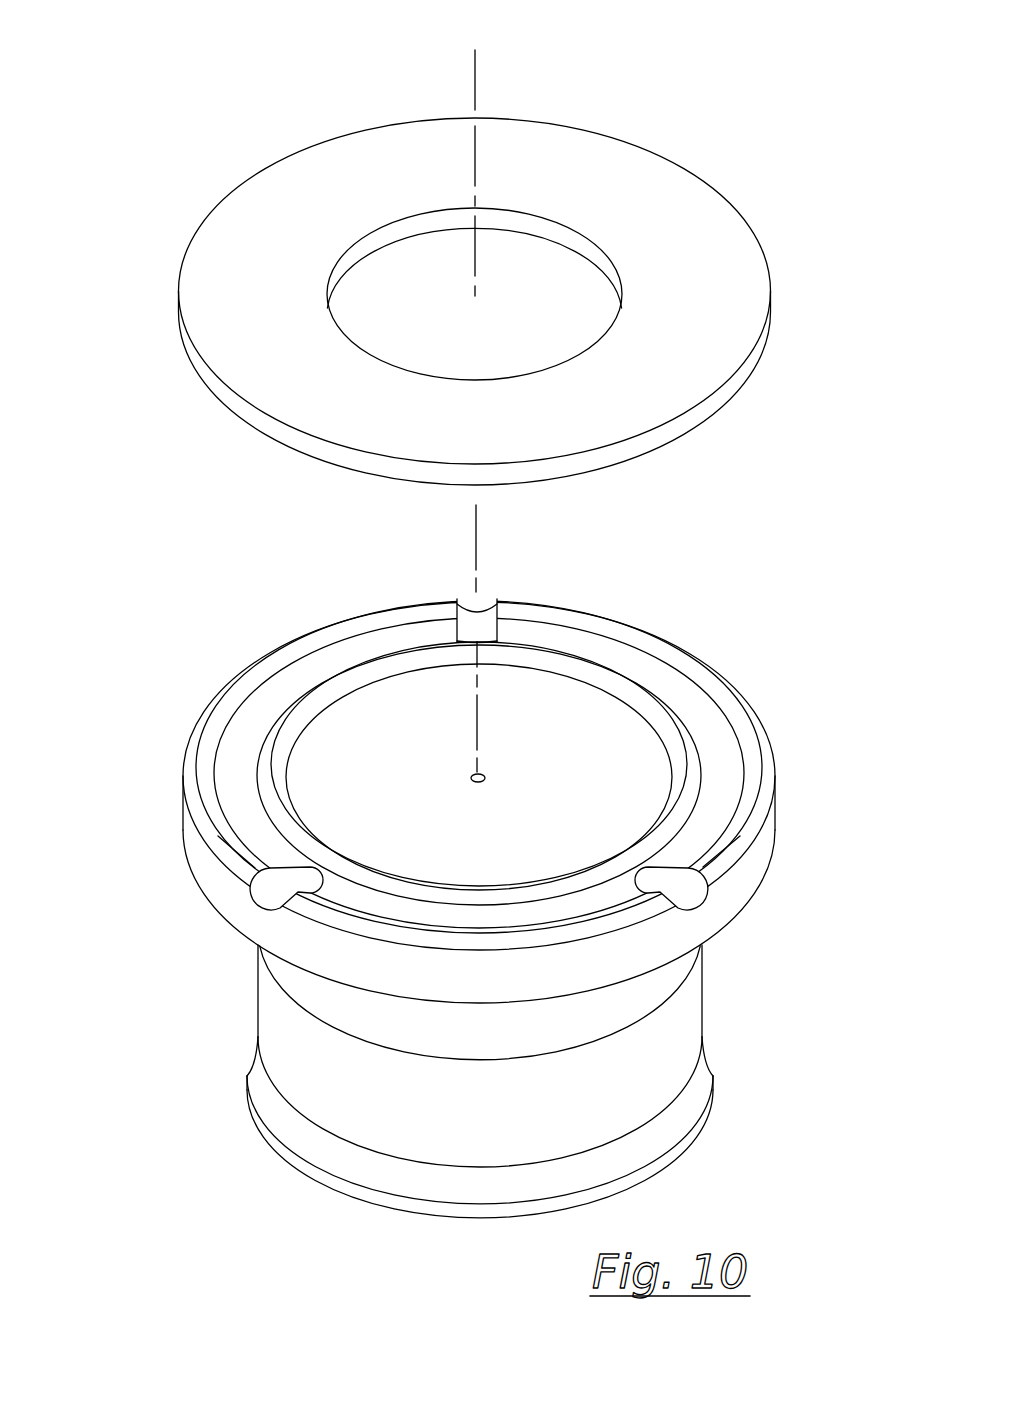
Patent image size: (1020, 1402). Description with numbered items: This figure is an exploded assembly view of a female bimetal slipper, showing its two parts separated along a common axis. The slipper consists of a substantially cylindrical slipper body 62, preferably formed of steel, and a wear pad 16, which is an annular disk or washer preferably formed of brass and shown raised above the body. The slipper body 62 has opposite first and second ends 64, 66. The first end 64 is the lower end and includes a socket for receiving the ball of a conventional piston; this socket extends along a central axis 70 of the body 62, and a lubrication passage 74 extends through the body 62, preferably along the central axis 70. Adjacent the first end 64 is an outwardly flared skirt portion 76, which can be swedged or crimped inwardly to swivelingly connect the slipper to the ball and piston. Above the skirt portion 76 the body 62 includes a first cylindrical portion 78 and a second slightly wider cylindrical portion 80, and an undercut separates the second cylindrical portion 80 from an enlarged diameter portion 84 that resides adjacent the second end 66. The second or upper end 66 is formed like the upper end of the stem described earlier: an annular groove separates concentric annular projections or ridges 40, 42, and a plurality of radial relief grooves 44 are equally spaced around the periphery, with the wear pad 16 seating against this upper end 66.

The wear pad 16 is at (662, 195).
The annular projection 40 is at (650, 690).
The annular projection 42 is at (737, 702).
The radial relief grooves 44 is at (480, 611).
The slipper body 62 is at (493, 863).
The first end 64 is at (703, 1122).
The second end 66 is at (217, 702).
The central axis 70 is at (473, 96).
The lubrication passage 74 is at (477, 775).
The flared skirt portion 76 is at (701, 1090).
The first cylindrical portion 78 is at (256, 1008).
The second cylindrical portion 80 is at (705, 958).
The enlarged diameter portion 84 is at (777, 822).